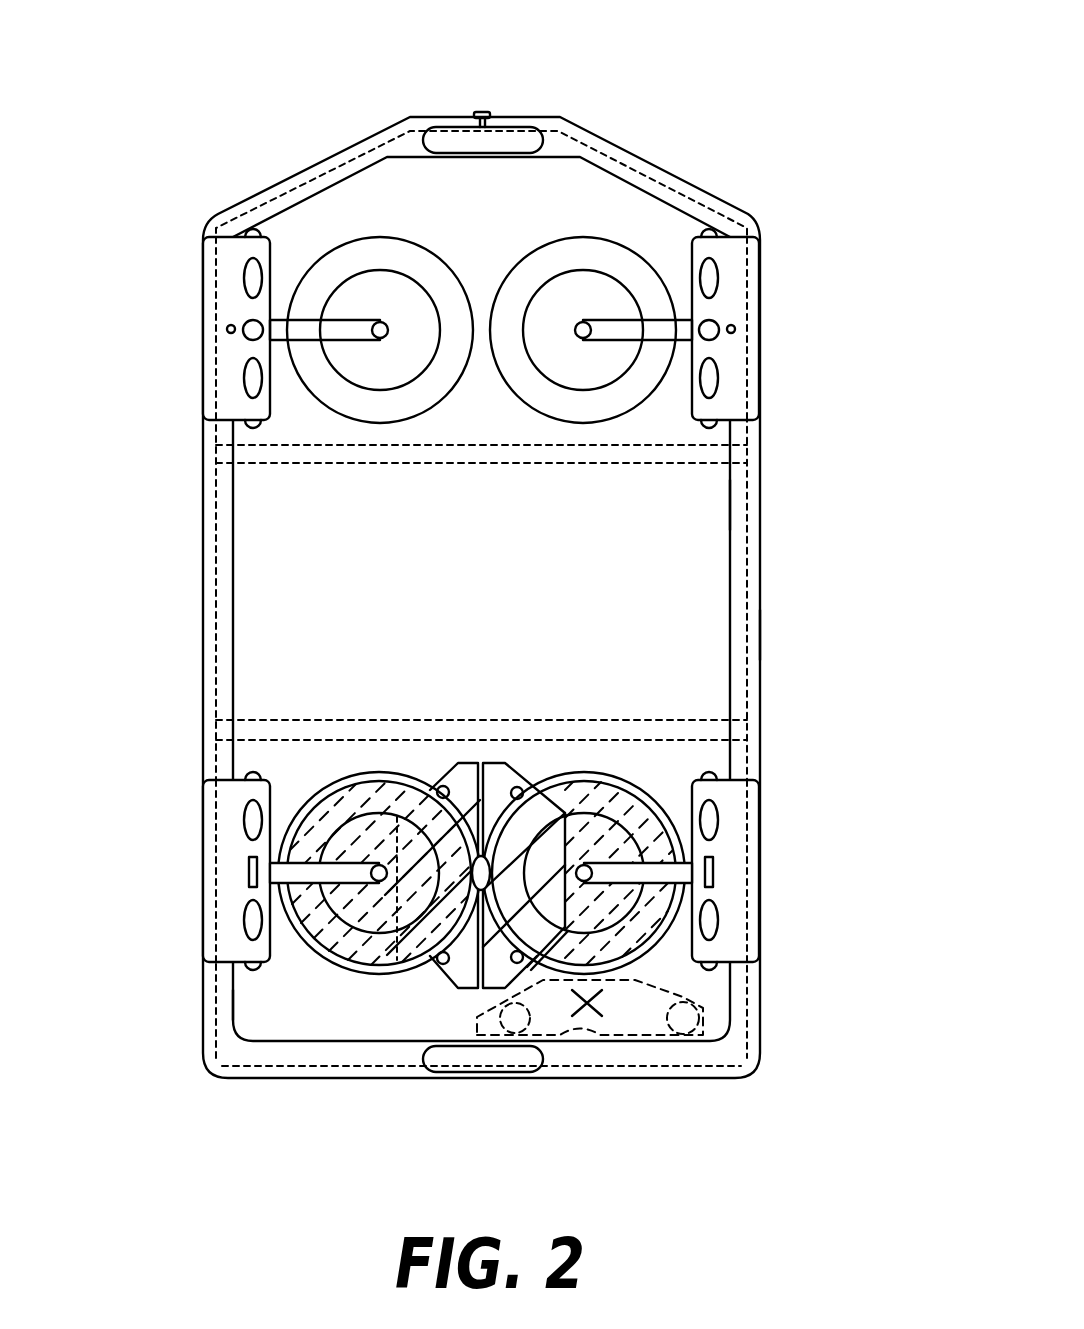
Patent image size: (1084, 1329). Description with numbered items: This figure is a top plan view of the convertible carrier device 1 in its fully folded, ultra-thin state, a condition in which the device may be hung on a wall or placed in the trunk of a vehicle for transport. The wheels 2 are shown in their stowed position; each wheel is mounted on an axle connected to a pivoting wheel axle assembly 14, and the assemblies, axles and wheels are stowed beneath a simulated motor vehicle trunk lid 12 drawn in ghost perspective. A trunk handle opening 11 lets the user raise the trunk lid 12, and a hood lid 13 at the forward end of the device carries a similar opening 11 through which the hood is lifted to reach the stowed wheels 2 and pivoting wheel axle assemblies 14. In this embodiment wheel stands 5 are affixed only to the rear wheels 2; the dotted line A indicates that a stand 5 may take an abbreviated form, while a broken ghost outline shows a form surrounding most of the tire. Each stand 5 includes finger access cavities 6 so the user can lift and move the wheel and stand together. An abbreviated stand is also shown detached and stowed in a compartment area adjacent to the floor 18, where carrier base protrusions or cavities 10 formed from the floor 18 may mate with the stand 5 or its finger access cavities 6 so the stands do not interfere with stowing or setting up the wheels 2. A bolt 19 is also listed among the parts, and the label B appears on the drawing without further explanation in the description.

The carrier device 1 is at (495, 593).
The wheel 2 is at (395, 236).
The wheel stand 5 is at (457, 765).
The finger access cavity 6 is at (443, 787).
The carrier base protrusion 10 is at (703, 1003).
The panel access opening 11 is at (517, 142).
The trunk lid 12 is at (245, 1005).
The hood lid 13 is at (318, 210).
The pivoting wheel axle assembly 14 is at (205, 325).
The floor 18 is at (710, 503).
The bolt 19 is at (745, 632).
The dotted line A is at (553, 807).
The region B is at (497, 1022).